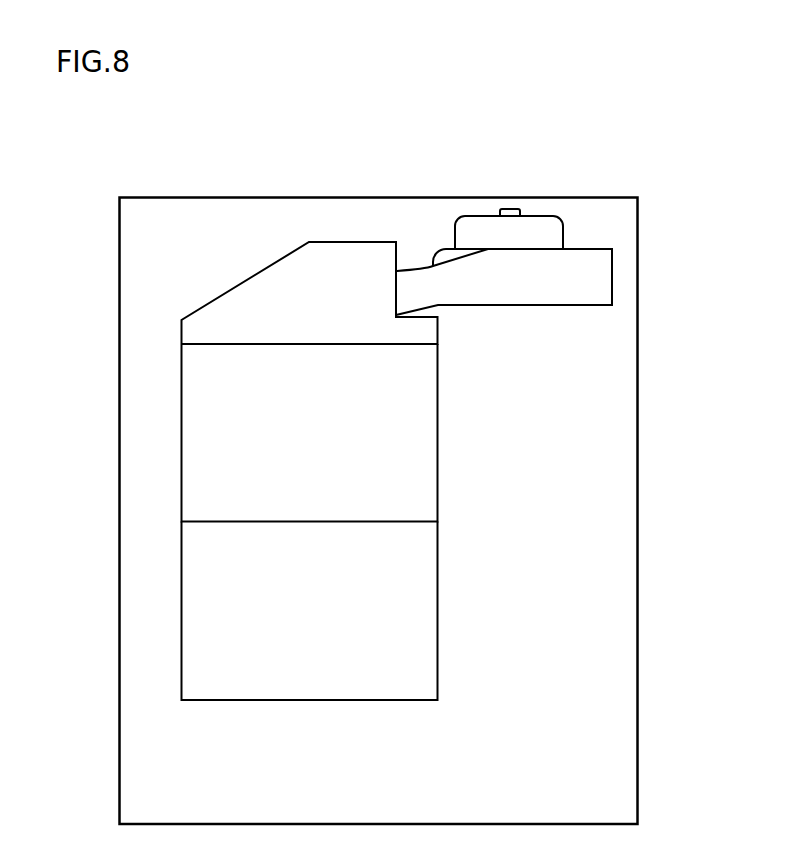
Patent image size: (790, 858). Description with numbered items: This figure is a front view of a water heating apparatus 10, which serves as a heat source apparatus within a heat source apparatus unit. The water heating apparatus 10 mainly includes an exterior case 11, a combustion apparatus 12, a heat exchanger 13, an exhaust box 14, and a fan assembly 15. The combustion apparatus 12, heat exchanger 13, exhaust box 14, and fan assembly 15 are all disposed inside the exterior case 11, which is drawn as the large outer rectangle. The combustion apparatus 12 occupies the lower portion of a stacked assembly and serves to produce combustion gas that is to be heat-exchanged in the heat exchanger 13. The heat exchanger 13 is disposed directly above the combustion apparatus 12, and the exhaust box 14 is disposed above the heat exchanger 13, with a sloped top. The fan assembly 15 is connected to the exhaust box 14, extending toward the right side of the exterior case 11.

The water heating apparatus 10 is at (525, 170).
The exterior case 11 is at (605, 197).
The combustion apparatus 12 is at (401, 612).
The heat exchanger 13 is at (401, 434).
The exhaust box 14 is at (327, 268).
The fan assembly 15 is at (592, 281).